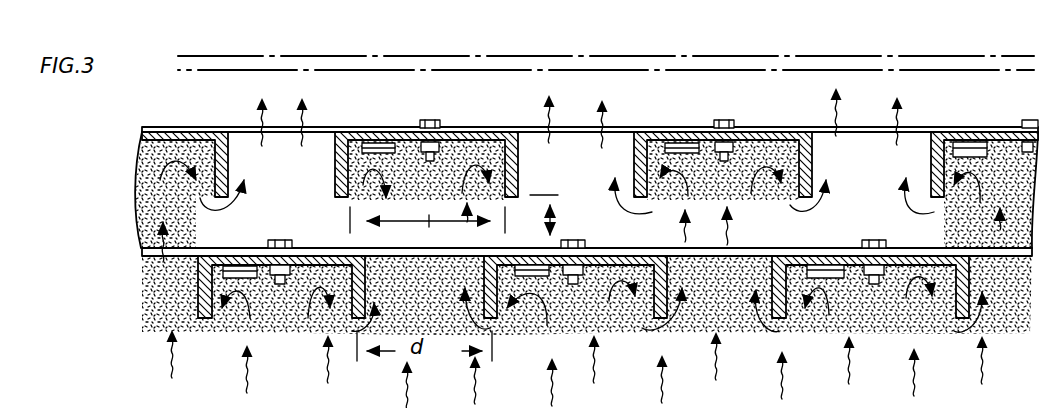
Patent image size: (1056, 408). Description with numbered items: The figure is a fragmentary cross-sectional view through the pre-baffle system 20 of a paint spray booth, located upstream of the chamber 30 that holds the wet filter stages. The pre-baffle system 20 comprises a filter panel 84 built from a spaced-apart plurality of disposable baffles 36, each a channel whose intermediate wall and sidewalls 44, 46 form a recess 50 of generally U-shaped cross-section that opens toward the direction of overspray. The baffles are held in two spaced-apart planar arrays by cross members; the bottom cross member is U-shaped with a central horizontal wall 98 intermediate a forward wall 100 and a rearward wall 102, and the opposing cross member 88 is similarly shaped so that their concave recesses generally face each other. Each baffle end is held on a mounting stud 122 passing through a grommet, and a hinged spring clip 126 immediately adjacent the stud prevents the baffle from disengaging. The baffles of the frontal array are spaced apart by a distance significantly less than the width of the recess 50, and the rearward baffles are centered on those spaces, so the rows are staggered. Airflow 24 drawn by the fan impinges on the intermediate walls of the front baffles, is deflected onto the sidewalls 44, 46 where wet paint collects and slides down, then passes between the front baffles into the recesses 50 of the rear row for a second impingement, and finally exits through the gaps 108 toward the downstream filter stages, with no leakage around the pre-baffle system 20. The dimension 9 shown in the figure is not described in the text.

The pre-baffle system 20 is at (590, 84).
The chamber 30 is at (620, 66).
The rearward wall 102 is at (622, 125).
The forward wall 100 is at (764, 248).
The disposable baffles 36 is at (590, 225).
The sidewall 44 is at (284, 287).
The sidewall 46 is at (365, 292).
The mounting stud 122 is at (430, 163).
The hinged spring clips 126 is at (386, 152).
The gaps 108 is at (246, 229).
The channel recess 50 is at (246, 229).
The central horizontal wall 98 is at (322, 146).
The filter panel 84 is at (484, 86).
The airflow 24 is at (549, 376).
The cross member 88 is at (577, 369).
The spacing dimension 9 is at (543, 215).